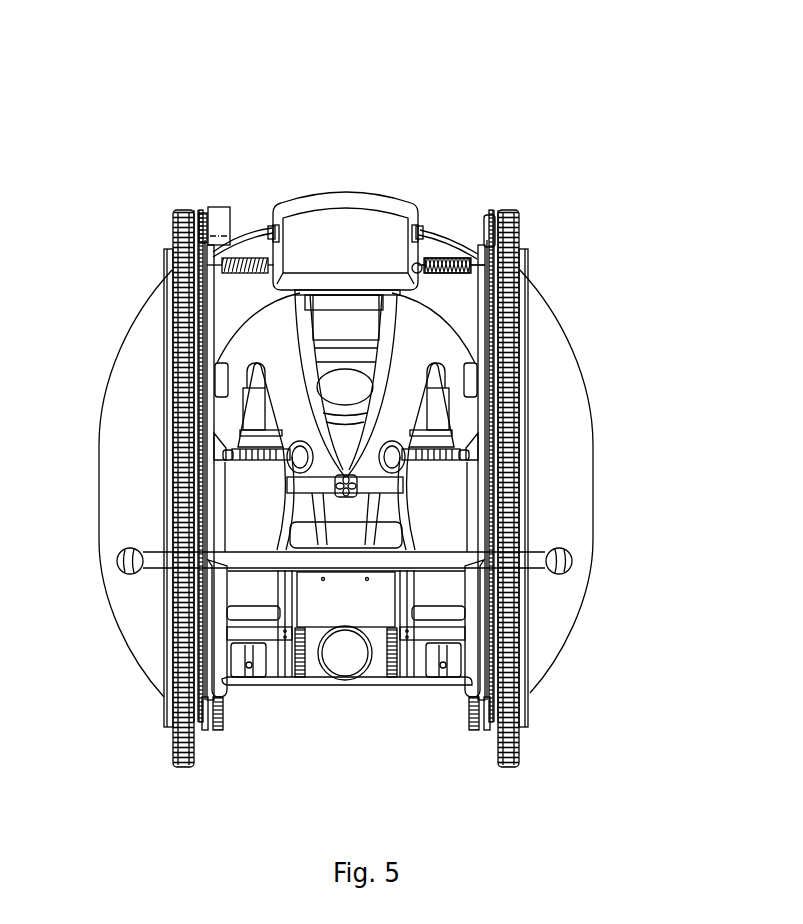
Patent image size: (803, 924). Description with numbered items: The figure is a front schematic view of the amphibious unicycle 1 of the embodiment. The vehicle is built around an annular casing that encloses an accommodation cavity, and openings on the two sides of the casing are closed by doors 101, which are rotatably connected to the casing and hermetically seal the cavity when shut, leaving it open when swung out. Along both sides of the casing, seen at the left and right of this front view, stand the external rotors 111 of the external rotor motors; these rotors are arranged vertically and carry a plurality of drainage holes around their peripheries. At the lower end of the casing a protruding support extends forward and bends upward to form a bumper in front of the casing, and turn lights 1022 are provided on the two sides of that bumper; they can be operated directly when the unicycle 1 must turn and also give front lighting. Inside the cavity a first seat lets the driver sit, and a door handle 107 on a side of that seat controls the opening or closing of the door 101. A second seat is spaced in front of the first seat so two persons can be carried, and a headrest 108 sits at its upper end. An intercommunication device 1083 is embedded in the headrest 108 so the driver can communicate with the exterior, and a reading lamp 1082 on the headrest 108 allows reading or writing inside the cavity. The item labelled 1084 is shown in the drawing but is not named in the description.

The amphibious unicycle 1 is at (389, 150).
The door 101 is at (568, 430).
The door handle 107 is at (248, 450).
The headrest 108 is at (418, 199).
The reading lamp 1082 is at (421, 232).
The intercommunication device 1083 is at (272, 228).
The slide box 1084 is at (228, 190).
The external rotor 111 is at (518, 237).
The turn light 1022 is at (118, 553).